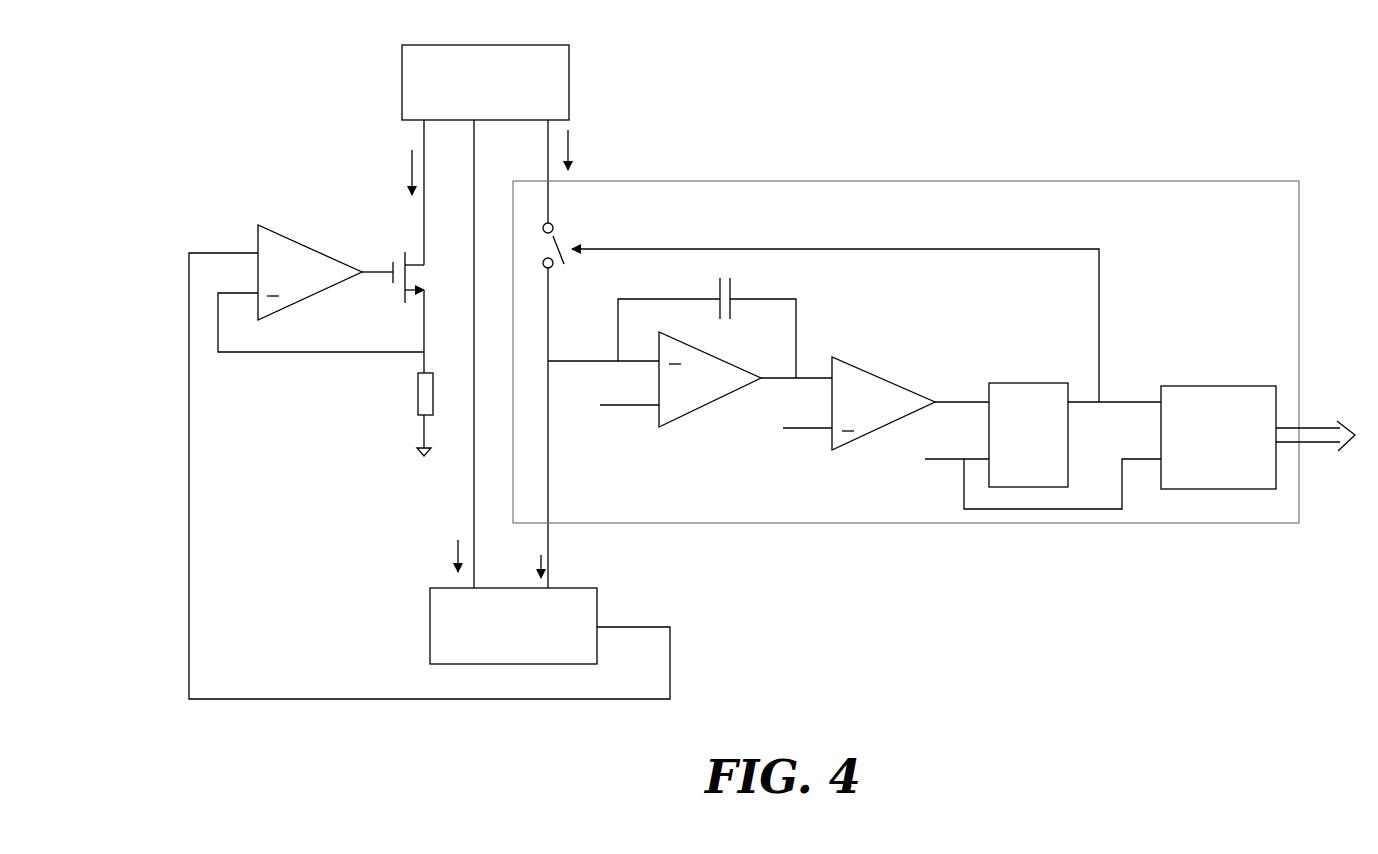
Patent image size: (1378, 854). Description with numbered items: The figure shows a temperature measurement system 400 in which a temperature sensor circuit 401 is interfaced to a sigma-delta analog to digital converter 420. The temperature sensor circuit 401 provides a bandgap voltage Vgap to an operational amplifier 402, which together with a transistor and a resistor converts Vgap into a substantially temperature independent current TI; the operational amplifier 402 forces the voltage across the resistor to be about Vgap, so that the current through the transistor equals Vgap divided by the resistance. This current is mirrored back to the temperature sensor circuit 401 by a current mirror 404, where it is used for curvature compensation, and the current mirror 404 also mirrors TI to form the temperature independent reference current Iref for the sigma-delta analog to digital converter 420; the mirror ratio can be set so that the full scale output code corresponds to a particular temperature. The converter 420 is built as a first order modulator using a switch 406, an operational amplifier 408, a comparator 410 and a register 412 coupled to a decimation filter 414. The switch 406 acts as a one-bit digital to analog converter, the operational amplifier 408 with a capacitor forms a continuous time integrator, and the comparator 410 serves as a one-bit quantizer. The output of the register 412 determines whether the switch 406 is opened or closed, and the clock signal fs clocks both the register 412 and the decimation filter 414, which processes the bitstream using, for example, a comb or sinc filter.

The temperature measurement system 400 is at (222, 71).
The temperature sensor circuit 401 is at (430, 627).
The operational amplifier 402 is at (284, 239).
The current mirror 404 is at (441, 48).
The switch 406 is at (561, 235).
The operational amplifier 408 is at (713, 362).
The comparator 410 is at (872, 377).
The register 412 is at (1004, 381).
The decimation filter 414 is at (1189, 386).
The sigma-delta analog to digital converter 420 is at (763, 181).